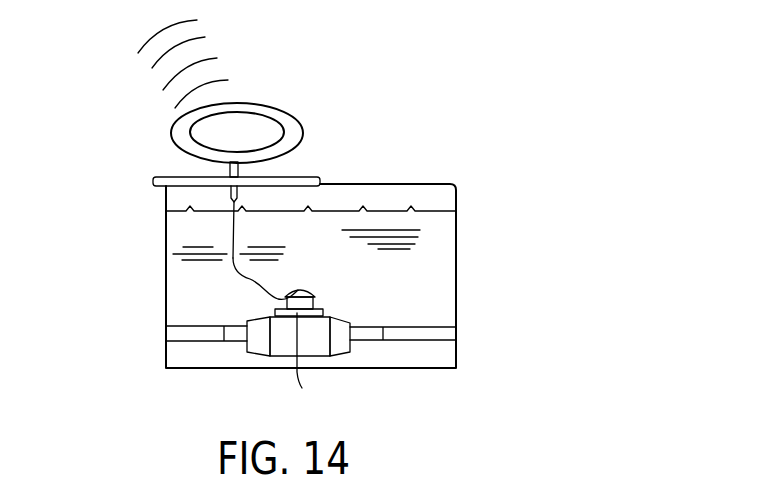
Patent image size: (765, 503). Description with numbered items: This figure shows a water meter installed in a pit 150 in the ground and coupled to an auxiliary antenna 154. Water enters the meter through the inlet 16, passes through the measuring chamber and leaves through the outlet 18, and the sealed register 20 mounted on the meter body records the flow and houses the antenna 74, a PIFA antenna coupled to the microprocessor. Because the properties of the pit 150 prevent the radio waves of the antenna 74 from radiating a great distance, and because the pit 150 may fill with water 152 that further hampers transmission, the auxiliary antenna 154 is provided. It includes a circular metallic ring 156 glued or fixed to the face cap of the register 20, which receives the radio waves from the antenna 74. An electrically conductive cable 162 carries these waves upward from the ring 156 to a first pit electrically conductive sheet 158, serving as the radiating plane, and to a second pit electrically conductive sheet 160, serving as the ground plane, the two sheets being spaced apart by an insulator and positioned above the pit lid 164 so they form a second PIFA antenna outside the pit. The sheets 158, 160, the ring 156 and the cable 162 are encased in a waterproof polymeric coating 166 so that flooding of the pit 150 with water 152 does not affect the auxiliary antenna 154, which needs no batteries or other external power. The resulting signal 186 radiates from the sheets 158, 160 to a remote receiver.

The signal 186 is at (150, 34).
The second pit electrically conductive sheet 160 is at (257, 113).
The first pit electrically conductive sheet 158 is at (302, 130).
The auxiliary antenna 154 is at (238, 178).
The pit lid 164 is at (323, 180).
The pit 150 is at (458, 233).
The water 152 is at (430, 297).
The waterproof coating 166 is at (233, 220).
The cable 162 is at (248, 276).
The antenna 74 is at (300, 289).
The register 20 is at (316, 289).
The circular metallic ring 156 is at (307, 367).
The inlet 16 is at (233, 342).
The outlet 18 is at (367, 344).